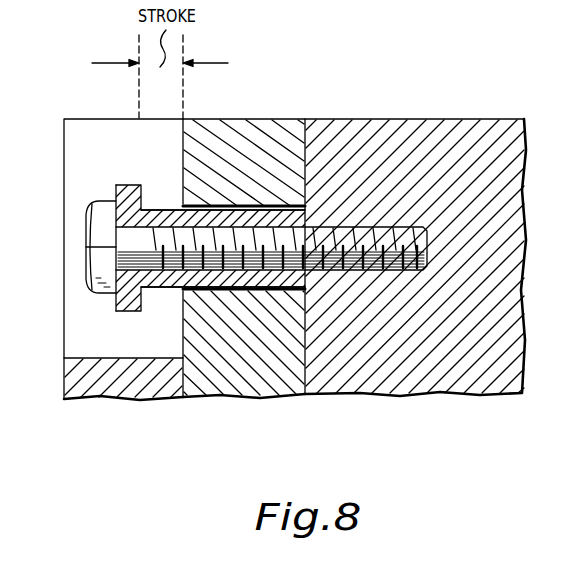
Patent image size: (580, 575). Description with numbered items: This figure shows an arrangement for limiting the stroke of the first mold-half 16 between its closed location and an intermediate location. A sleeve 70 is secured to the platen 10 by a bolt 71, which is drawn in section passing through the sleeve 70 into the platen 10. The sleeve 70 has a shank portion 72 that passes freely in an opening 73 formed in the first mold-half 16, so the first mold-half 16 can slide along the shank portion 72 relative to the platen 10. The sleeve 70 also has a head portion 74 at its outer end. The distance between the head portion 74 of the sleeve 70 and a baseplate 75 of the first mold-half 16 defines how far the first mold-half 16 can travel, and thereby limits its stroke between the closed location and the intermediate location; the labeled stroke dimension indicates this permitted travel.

The platen 10 is at (478, 121).
The first mold-half 16 is at (135, 393).
The sleeve 70 is at (123, 323).
The bolt 71 is at (88, 232).
The shank portion 72 is at (257, 206).
The opening 73 is at (290, 206).
The head portion 74 is at (128, 188).
The baseplate 75 is at (258, 385).